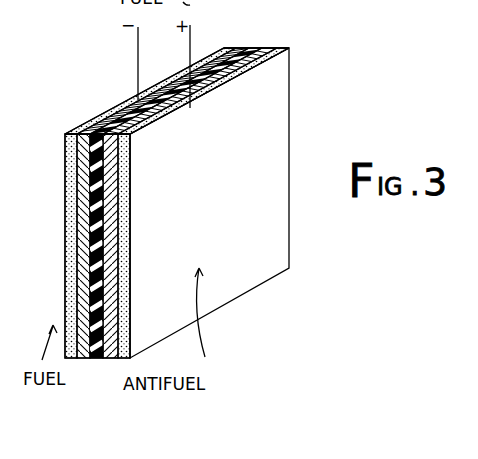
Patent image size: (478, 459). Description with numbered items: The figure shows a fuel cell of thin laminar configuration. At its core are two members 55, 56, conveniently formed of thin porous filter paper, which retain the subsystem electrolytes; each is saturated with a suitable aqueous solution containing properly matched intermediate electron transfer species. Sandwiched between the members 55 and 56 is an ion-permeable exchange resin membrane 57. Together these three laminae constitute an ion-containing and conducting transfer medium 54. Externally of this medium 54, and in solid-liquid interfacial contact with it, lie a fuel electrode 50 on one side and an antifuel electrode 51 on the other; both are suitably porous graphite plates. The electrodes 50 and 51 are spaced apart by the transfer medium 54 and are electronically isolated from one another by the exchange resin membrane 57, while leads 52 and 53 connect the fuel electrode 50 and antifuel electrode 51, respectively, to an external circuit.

The fuel electrode 50 is at (66, 247).
The antifuel electrode 51 is at (127, 249).
The lead 52 is at (137, 57).
The lead 53 is at (191, 33).
The ion-containing and conducting transfer medium 54 is at (243, 48).
The member 55 is at (72, 200).
The member 56 is at (111, 202).
The ion-permeable exchange resin membrane 57 is at (88, 290).